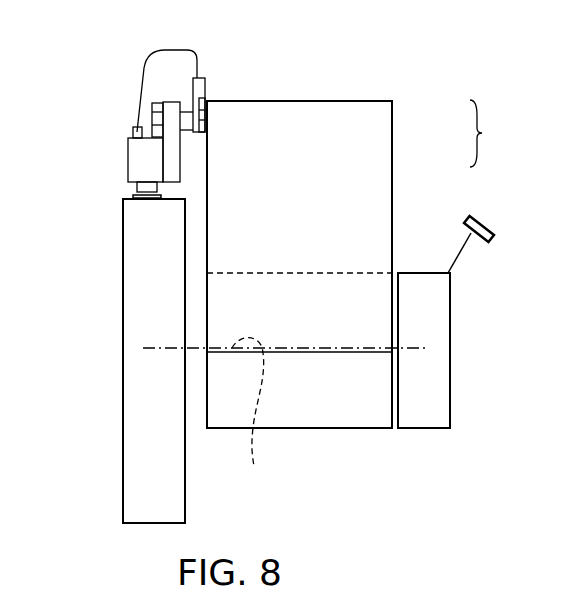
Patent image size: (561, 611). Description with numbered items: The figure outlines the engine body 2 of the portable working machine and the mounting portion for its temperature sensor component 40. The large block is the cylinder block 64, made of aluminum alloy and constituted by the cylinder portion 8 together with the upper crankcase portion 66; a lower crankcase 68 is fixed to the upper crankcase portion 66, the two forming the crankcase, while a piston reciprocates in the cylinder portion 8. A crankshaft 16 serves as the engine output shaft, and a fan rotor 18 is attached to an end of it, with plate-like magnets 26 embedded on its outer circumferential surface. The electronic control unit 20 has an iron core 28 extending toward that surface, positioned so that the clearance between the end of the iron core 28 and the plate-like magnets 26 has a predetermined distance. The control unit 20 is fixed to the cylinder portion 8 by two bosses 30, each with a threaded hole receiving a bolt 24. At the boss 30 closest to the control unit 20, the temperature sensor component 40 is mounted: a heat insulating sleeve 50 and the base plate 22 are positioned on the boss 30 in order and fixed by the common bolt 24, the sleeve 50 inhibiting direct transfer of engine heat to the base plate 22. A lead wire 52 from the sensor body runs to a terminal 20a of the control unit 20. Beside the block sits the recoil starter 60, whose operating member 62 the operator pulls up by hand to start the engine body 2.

The engine body 2 is at (390, 65).
The cylinder portion 8 is at (367, 130).
The crankshaft 16 is at (285, 416).
The fan rotor 18 is at (133, 410).
The electronic control unit 20 is at (128, 165).
The terminal 20a is at (134, 132).
The base plate 22 is at (172, 158).
The bolt 24 is at (152, 108).
The plate-like magnets 26 is at (148, 198).
The iron core 28 is at (146, 188).
The boss 30 is at (204, 118).
The temperature sensor component 40 is at (205, 86).
The heat insulating sleeve 50 is at (186, 112).
The lead wire 52 is at (162, 50).
The recoil starter 60 is at (443, 392).
The operating member 62 is at (477, 223).
The cylinder block 64 is at (514, 143).
The upper crankcase portion 66 is at (330, 290).
The lower crankcase 68 is at (337, 420).